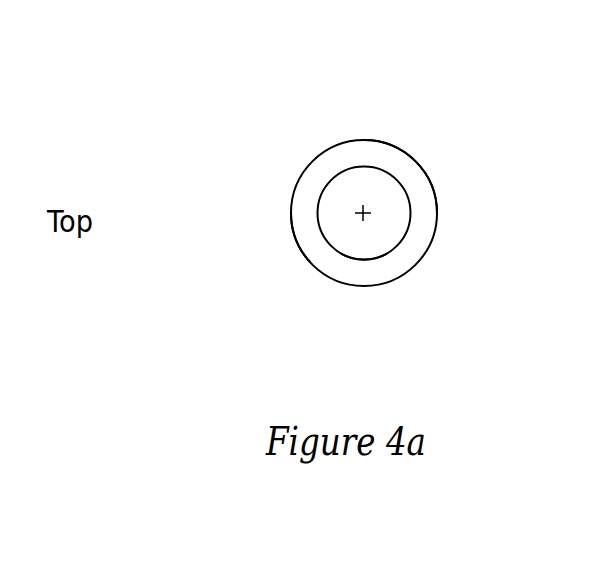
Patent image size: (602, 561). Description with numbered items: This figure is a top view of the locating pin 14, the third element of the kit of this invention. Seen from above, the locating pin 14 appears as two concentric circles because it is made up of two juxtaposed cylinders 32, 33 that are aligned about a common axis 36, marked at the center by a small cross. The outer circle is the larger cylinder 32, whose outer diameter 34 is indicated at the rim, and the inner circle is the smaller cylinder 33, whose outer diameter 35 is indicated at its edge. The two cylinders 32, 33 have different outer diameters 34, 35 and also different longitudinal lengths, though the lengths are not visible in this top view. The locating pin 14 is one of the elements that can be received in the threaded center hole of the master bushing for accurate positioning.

The locating pin 14 is at (493, 180).
The cylinder 32 is at (372, 153).
The cylinder 33 is at (385, 230).
The outer diameter 34 is at (301, 249).
The outer diameter 35 is at (365, 257).
The common axis 36 is at (360, 208).